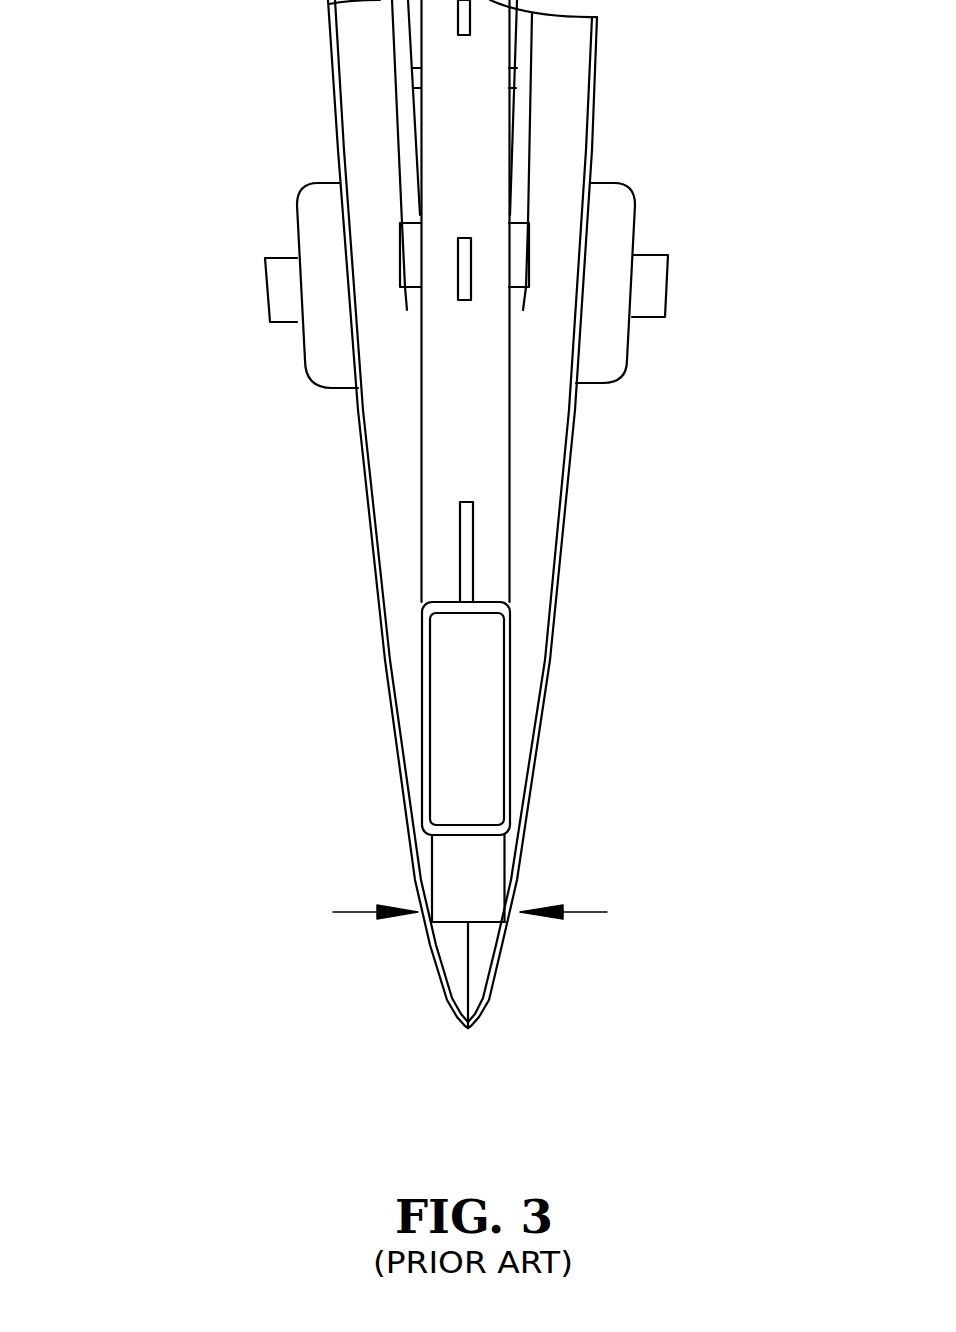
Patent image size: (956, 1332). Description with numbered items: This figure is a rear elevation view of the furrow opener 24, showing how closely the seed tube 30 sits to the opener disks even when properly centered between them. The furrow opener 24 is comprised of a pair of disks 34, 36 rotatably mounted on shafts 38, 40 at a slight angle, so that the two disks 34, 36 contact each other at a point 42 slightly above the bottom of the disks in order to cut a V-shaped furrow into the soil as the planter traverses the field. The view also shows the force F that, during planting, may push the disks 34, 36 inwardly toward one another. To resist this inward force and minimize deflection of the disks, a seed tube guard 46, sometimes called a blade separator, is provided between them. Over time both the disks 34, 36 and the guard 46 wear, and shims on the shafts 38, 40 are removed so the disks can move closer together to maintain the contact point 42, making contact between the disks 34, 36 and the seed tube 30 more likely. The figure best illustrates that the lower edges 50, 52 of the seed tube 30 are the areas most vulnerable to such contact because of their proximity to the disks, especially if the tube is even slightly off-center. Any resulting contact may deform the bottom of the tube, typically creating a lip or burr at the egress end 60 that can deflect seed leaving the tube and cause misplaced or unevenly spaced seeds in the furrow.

The furrow opener 24 is at (255, 80).
The seed tube 30 is at (500, 468).
The disk 34 is at (387, 597).
The disk 36 is at (545, 580).
The shaft 38 is at (287, 325).
The shaft 40 is at (650, 307).
The contact point 42 is at (470, 967).
The seed tube guard 46 is at (465, 913).
The lower edge 50 is at (430, 823).
The lower edge 52 is at (507, 823).
The egress end 60 is at (477, 820).